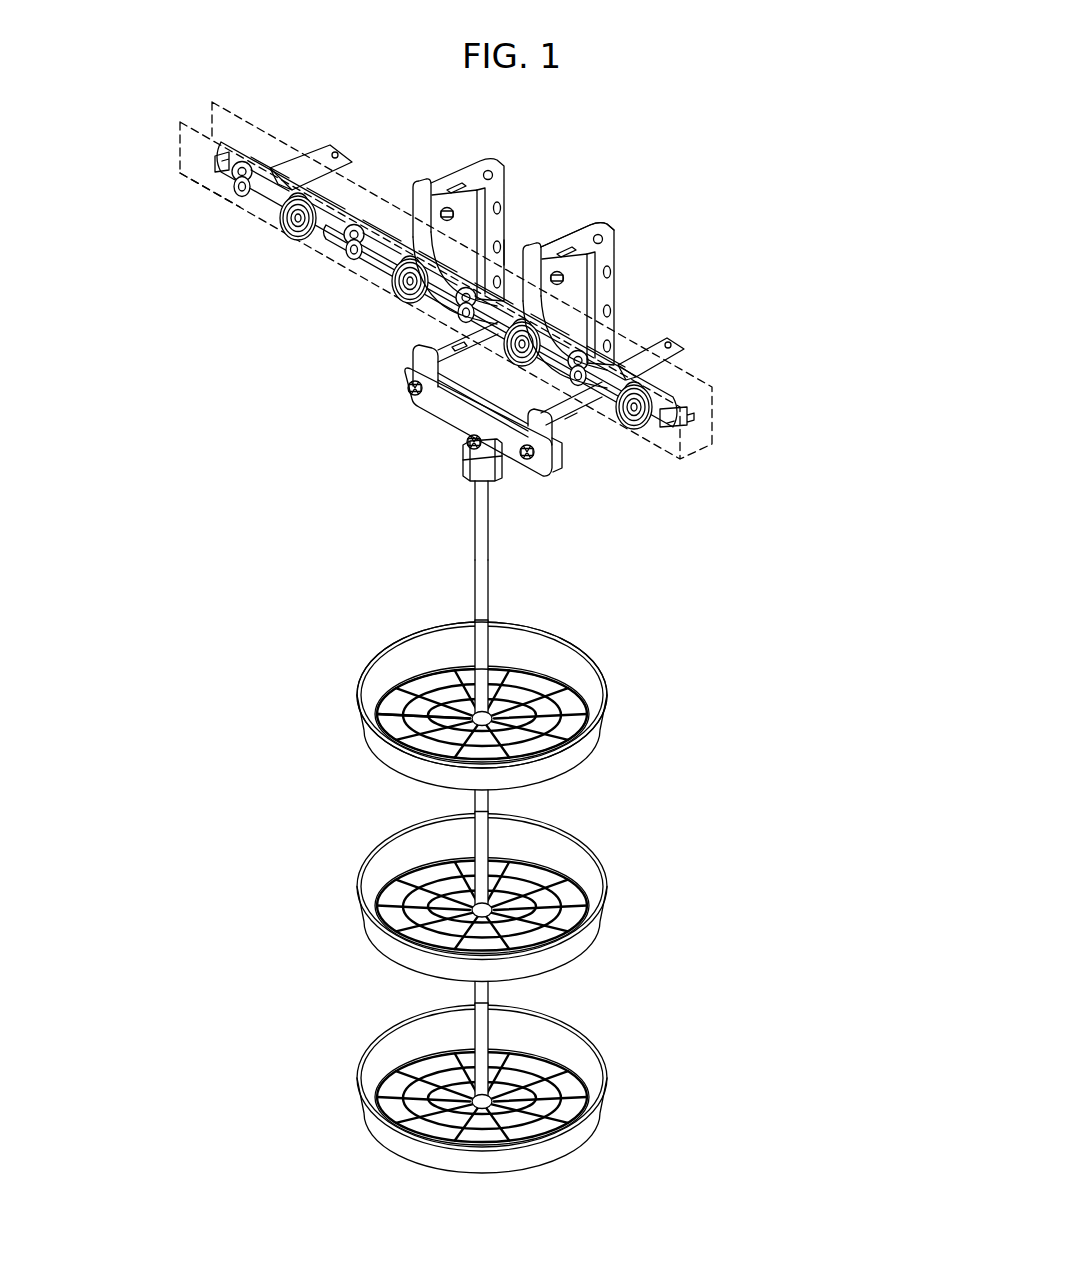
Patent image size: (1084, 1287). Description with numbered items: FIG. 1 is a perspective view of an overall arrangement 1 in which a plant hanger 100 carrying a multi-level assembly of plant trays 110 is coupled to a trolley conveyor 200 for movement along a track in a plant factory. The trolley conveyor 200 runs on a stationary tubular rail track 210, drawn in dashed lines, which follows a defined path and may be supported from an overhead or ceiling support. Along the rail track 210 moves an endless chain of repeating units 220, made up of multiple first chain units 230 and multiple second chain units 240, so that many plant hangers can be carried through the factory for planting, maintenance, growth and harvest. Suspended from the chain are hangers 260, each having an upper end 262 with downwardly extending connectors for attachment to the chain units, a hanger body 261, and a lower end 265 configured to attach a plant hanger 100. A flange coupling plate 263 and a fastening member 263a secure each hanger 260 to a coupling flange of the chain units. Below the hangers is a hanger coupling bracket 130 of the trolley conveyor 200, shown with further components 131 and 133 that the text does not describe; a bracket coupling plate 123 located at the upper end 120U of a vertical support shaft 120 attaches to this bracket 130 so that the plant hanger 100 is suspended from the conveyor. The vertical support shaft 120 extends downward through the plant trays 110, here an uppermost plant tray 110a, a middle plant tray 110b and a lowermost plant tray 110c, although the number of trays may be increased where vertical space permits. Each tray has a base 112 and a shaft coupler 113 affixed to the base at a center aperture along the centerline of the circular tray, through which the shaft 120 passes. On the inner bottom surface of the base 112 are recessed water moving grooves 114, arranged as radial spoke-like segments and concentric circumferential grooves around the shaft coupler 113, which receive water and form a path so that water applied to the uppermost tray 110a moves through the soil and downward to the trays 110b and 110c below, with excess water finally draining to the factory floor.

The overhead conveyor system 1 is at (270, 92).
The plant hanger 100 is at (825, 538).
The plant trays 110 is at (748, 676).
The uppermost plant tray 110a is at (600, 737).
The middle plant tray 110b is at (600, 926).
The lowermost plant tray 110c is at (588, 1116).
The base 112 is at (527, 672).
The shaft coupler 113 is at (537, 705).
The recessed water moving grooves 114 is at (400, 742).
The vertical support shaft 120 is at (478, 552).
The upper end of the vertical support shaft 120U is at (470, 490).
The bracket coupling plate 123 is at (467, 463).
The hanger coupling bracket 130 is at (445, 408).
The fastening bolt 131 is at (408, 388).
The rod holder 133 is at (482, 447).
The trolley conveyor 200 is at (640, 155).
The stationary tubular rail track 210 is at (180, 155).
The endless chain repeating units 220 is at (233, 307).
The first chain units 230 is at (280, 232).
The second chain units 240 is at (390, 296).
The hangers 260 is at (753, 310).
The hanger body 261 is at (608, 292).
The upper end 262 is at (453, 173).
The flange coupling plate 263 is at (570, 263).
The first fastening member 263a is at (507, 252).
The lower end 265 is at (617, 362).